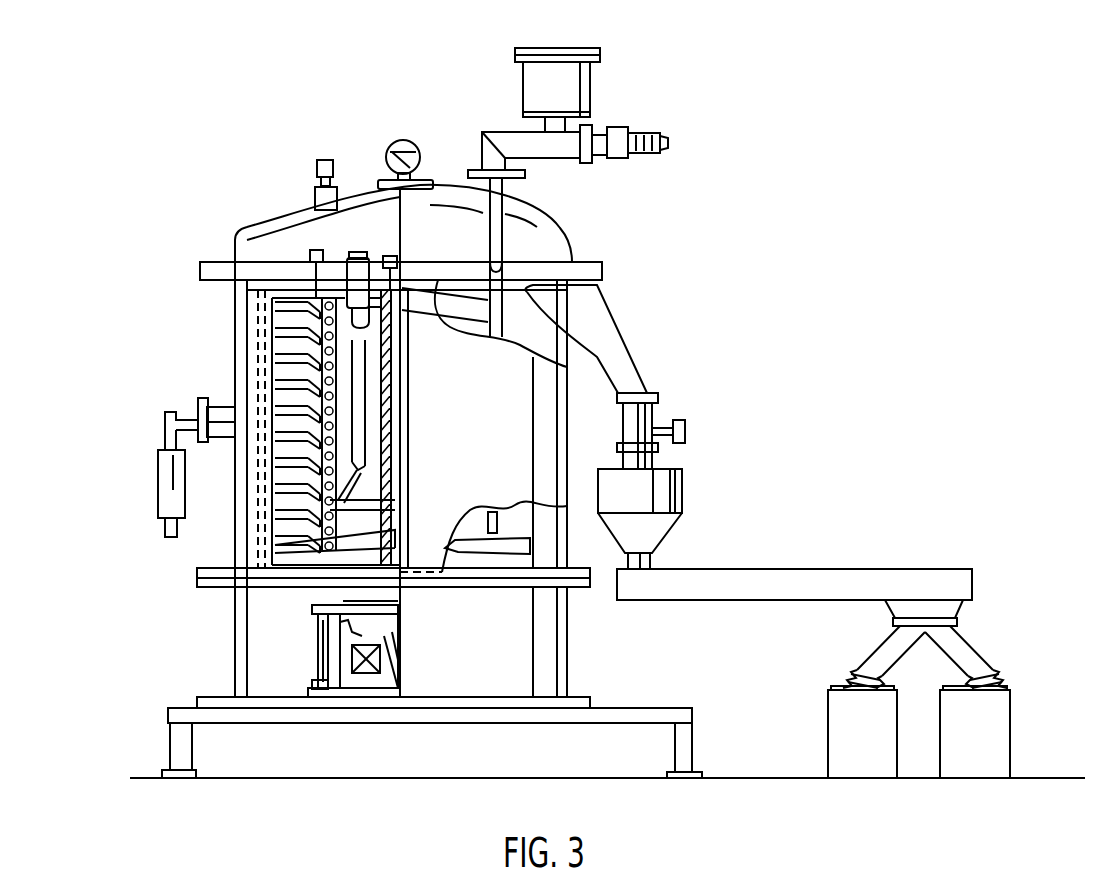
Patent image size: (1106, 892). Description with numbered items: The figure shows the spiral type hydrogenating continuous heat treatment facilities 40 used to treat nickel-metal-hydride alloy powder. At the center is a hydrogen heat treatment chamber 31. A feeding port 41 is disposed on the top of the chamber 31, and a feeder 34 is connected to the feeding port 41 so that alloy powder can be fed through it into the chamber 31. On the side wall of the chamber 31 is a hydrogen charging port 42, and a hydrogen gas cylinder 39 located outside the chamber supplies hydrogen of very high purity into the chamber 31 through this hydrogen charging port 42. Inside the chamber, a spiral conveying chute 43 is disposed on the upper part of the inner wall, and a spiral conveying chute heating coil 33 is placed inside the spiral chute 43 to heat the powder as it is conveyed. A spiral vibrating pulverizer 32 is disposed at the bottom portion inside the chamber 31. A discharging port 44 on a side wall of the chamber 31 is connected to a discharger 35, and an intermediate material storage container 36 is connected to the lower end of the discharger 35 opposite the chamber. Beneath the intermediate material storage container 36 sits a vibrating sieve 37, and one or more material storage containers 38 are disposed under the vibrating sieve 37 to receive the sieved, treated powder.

The hydrogen heat treatment chamber 31 is at (298, 233).
The spiral vibrating pulverizer 32 is at (320, 650).
The spiral conveying chute heating coil 33 is at (318, 483).
The feeder 34 is at (583, 92).
The discharger 35 is at (640, 410).
The intermediate material storage container 36 is at (664, 493).
The vibrating sieve 37 is at (820, 582).
The material storage container 38 is at (993, 737).
The hydrogen gas cylinder 39 is at (167, 497).
The hydrogenating continuous heat treatment facilities 40 is at (322, 168).
The feeding port 41 is at (497, 218).
The hydrogen charging port 42 is at (223, 402).
The spiral conveying chute 43 is at (307, 377).
The discharging port 44 is at (602, 315).